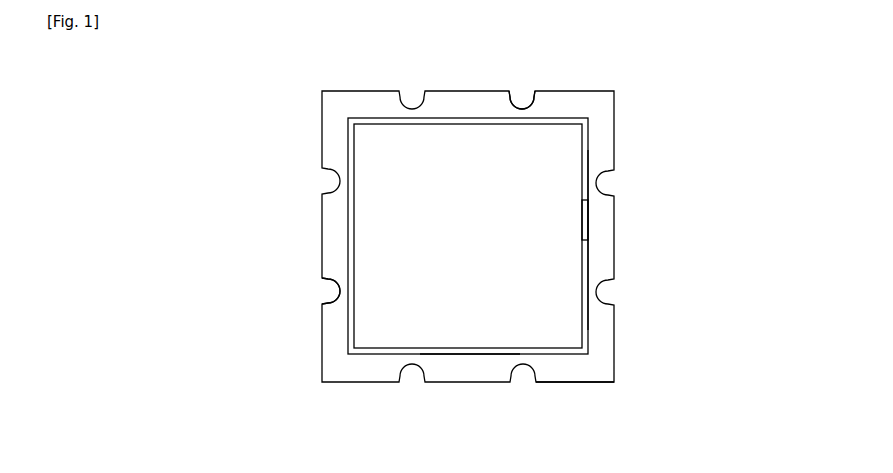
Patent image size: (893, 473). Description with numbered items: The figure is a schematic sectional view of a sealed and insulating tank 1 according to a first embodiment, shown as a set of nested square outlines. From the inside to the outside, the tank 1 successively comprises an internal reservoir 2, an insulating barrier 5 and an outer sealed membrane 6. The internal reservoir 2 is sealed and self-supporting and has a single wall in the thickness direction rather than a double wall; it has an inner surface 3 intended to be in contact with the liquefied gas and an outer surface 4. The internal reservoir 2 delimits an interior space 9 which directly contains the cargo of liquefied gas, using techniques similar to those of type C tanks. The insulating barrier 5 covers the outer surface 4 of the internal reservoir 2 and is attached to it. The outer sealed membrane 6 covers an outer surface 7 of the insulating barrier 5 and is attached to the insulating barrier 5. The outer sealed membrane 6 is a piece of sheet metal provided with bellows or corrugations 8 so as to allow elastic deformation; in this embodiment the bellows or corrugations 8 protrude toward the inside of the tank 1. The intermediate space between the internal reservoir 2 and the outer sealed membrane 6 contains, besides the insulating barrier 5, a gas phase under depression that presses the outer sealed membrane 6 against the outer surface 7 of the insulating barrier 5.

The tank 1 is at (674, 109).
The internal reservoir 2 is at (602, 213).
The inner surface 3 is at (585, 277).
The outer surface 4 is at (588, 248).
The insulating barrier 5 is at (466, 378).
The outer sealed membrane 6 is at (575, 402).
The outer surface 7 is at (368, 373).
The bellows or corrugations 8 is at (517, 101).
The interior space 9 is at (449, 138).